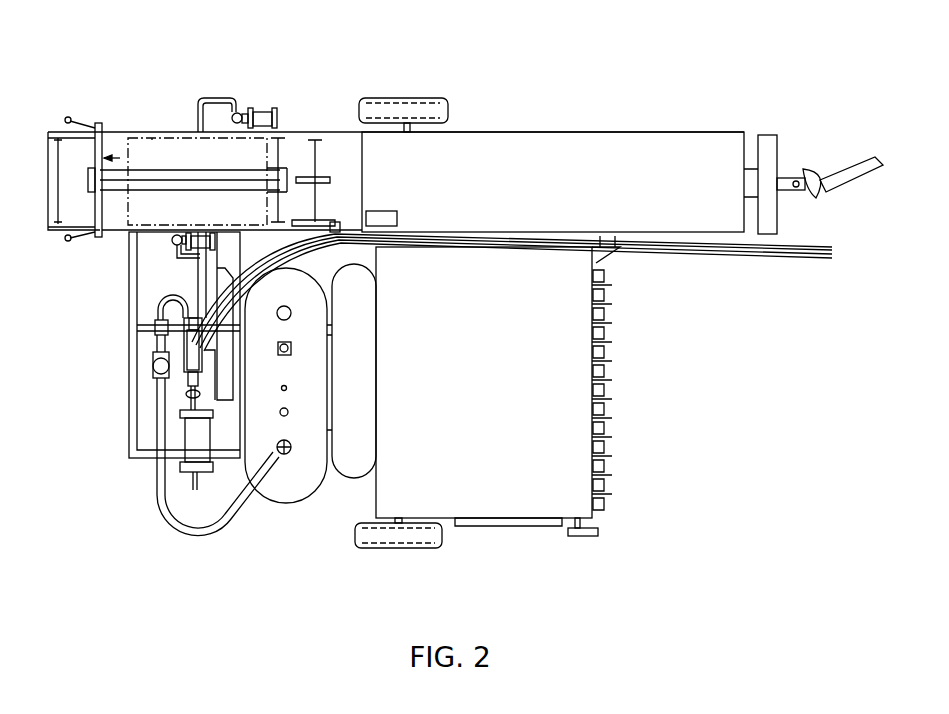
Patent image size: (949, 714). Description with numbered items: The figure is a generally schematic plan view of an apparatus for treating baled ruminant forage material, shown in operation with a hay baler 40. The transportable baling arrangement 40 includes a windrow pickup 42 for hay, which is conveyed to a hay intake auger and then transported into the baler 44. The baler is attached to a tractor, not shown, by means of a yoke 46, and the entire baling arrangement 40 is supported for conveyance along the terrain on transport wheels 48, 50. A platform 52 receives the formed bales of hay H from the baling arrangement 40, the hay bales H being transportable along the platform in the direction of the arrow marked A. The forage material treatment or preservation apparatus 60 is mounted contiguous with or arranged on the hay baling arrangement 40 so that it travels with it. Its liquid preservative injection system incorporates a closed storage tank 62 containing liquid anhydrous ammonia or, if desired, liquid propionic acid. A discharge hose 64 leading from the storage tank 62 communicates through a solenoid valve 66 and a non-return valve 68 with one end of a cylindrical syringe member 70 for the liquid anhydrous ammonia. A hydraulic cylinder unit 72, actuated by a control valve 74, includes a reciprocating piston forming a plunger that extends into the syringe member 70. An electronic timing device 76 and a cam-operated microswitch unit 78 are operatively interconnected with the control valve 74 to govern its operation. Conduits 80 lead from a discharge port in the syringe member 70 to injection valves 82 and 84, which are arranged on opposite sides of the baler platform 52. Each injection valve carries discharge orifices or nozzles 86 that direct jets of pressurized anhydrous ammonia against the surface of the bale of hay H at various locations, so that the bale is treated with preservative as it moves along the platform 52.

The hay baler 40 is at (504, 128).
The windrow pickup 42 is at (612, 447).
The baler 44 is at (541, 194).
The yoke 46 is at (843, 182).
The transport wheel 48 is at (378, 98).
The transport wheel 50 is at (600, 535).
The platform 52 is at (107, 128).
The forage material treatment apparatus 60 is at (270, 516).
The closed storage tank 62 is at (306, 498).
The discharge hose 64 is at (195, 533).
The solenoid valve 66 is at (153, 358).
The non-return valve 68 is at (155, 325).
The cylindrical syringe member 70 is at (182, 386).
The hydraulic cylinder unit 72 is at (202, 478).
The control valve 74 is at (184, 350).
The electronic timing device 76 is at (386, 211).
The cam-operated microswitch unit 78 is at (338, 222).
The conduit 80 is at (198, 278).
The injection valve 82 is at (259, 108).
The injection valve 84 is at (217, 243).
The discharge nozzles 86 is at (234, 112).
The hay bale H is at (151, 138).